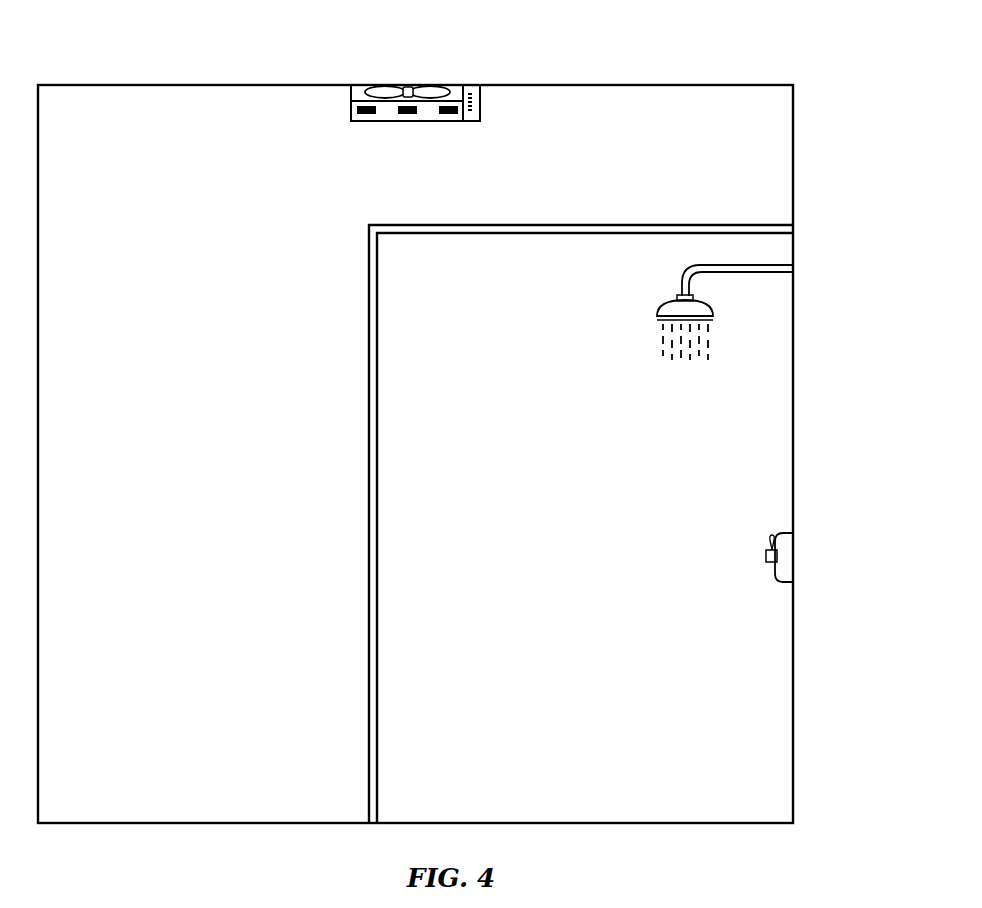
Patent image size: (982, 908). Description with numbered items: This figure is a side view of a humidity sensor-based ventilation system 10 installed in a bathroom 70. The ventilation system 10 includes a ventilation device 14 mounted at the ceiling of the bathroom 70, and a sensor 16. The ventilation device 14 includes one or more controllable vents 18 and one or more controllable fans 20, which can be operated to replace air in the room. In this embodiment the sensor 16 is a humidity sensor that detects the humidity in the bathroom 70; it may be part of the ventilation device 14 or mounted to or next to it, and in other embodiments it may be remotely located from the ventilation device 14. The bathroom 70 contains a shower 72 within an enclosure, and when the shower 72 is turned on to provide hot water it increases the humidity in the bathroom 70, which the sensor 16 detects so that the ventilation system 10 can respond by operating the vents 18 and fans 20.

The sensor-based ventilation system 10 is at (543, 53).
The ventilation device 14 is at (407, 122).
The sensor 16 is at (478, 100).
The controllable vents 18 is at (365, 116).
The controllable fans 20 is at (430, 87).
The bathroom 70 is at (192, 661).
The shower 72 is at (775, 249).